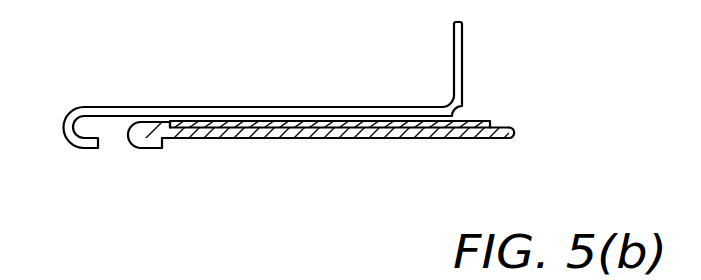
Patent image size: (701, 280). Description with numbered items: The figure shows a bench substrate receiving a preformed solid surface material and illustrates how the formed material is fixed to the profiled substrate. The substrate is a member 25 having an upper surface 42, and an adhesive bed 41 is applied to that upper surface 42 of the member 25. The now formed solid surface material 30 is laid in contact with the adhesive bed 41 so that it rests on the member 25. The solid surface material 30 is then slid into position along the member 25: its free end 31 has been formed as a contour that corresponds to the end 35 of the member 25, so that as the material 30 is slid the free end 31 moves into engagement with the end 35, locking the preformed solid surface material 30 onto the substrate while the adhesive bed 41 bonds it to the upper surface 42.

The solid surface material 30 is at (316, 107).
The free end 31 is at (65, 141).
The end 35 is at (140, 149).
The member 25 is at (388, 138).
The adhesive bed 41 is at (467, 121).
The upper surface 42 is at (500, 130).